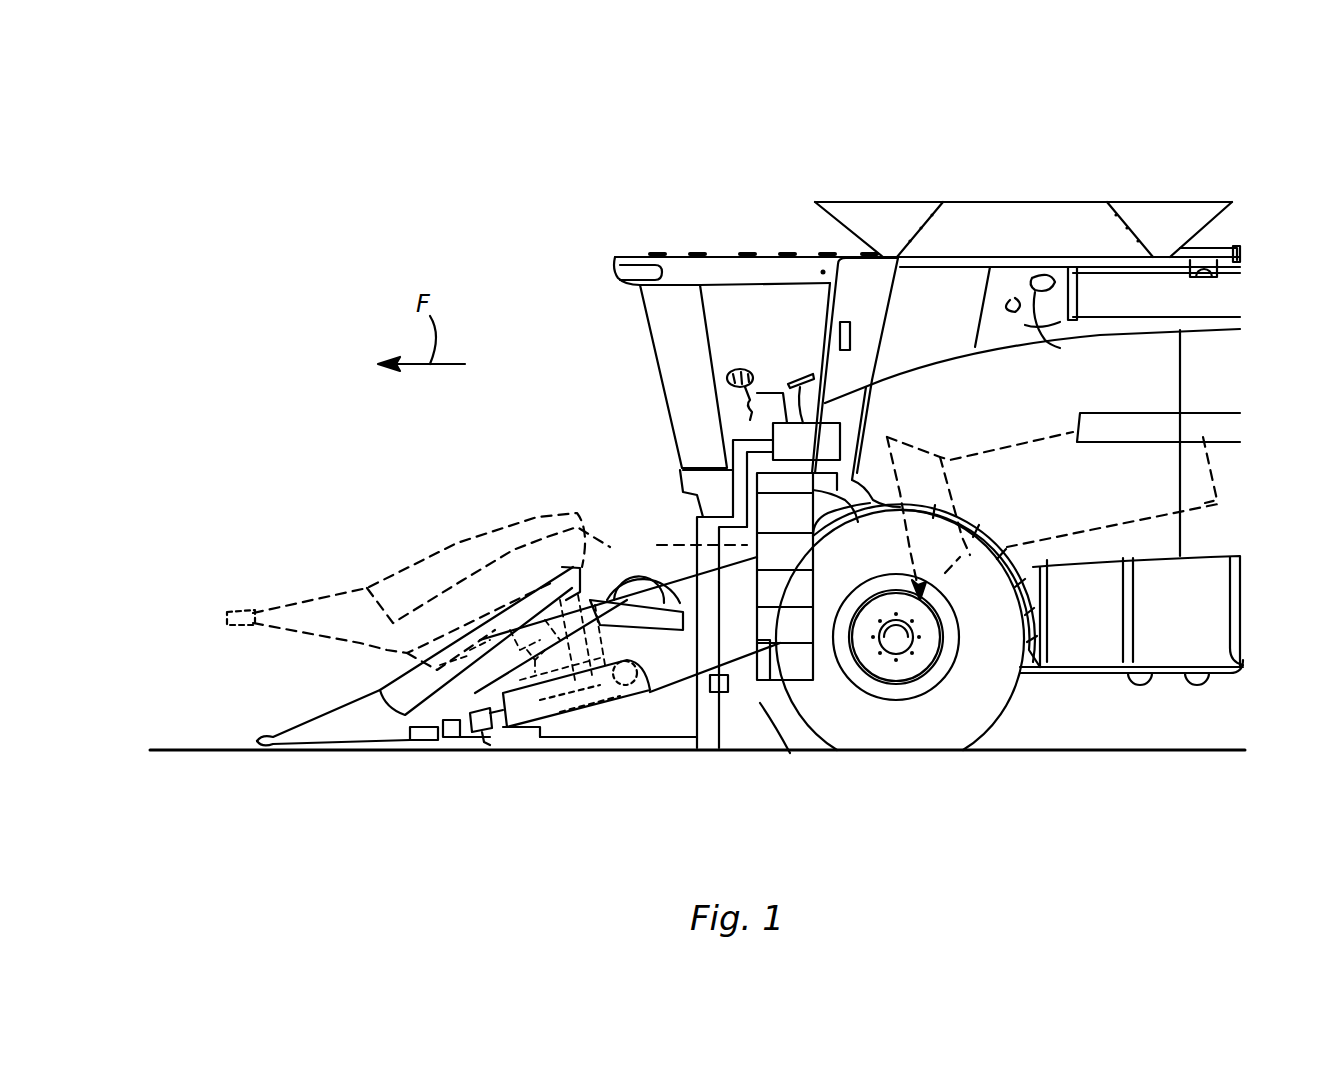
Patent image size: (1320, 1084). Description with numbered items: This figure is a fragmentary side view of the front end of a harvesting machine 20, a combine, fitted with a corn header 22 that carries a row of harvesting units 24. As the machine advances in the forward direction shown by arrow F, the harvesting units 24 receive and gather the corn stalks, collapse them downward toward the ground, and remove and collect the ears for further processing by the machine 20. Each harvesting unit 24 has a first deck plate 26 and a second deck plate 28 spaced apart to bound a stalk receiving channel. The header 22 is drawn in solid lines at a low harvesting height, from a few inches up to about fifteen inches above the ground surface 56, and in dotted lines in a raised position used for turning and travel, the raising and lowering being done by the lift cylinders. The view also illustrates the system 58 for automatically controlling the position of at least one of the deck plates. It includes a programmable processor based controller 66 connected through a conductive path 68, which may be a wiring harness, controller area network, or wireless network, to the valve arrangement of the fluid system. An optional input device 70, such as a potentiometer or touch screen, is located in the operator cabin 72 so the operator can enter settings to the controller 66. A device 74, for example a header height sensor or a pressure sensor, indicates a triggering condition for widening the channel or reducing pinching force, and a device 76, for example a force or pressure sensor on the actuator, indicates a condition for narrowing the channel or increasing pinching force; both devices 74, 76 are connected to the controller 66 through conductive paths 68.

The harvesting machine 20 is at (1197, 171).
The corn header 22 is at (310, 598).
The harvesting units 24 is at (463, 753).
The first deck plate 26 is at (367, 784).
The second deck plate 28 is at (423, 753).
The ground surface 56 is at (190, 750).
The system for automatically controlling deck plate position 58 is at (518, 712).
The programmable processor based controller 66 is at (797, 377).
The conductive path 68 is at (703, 514).
The input device 70 is at (727, 388).
The operator cabin 72 is at (622, 266).
The triggering condition indicating device 74 is at (716, 692).
The condition indicating device 76 is at (483, 753).